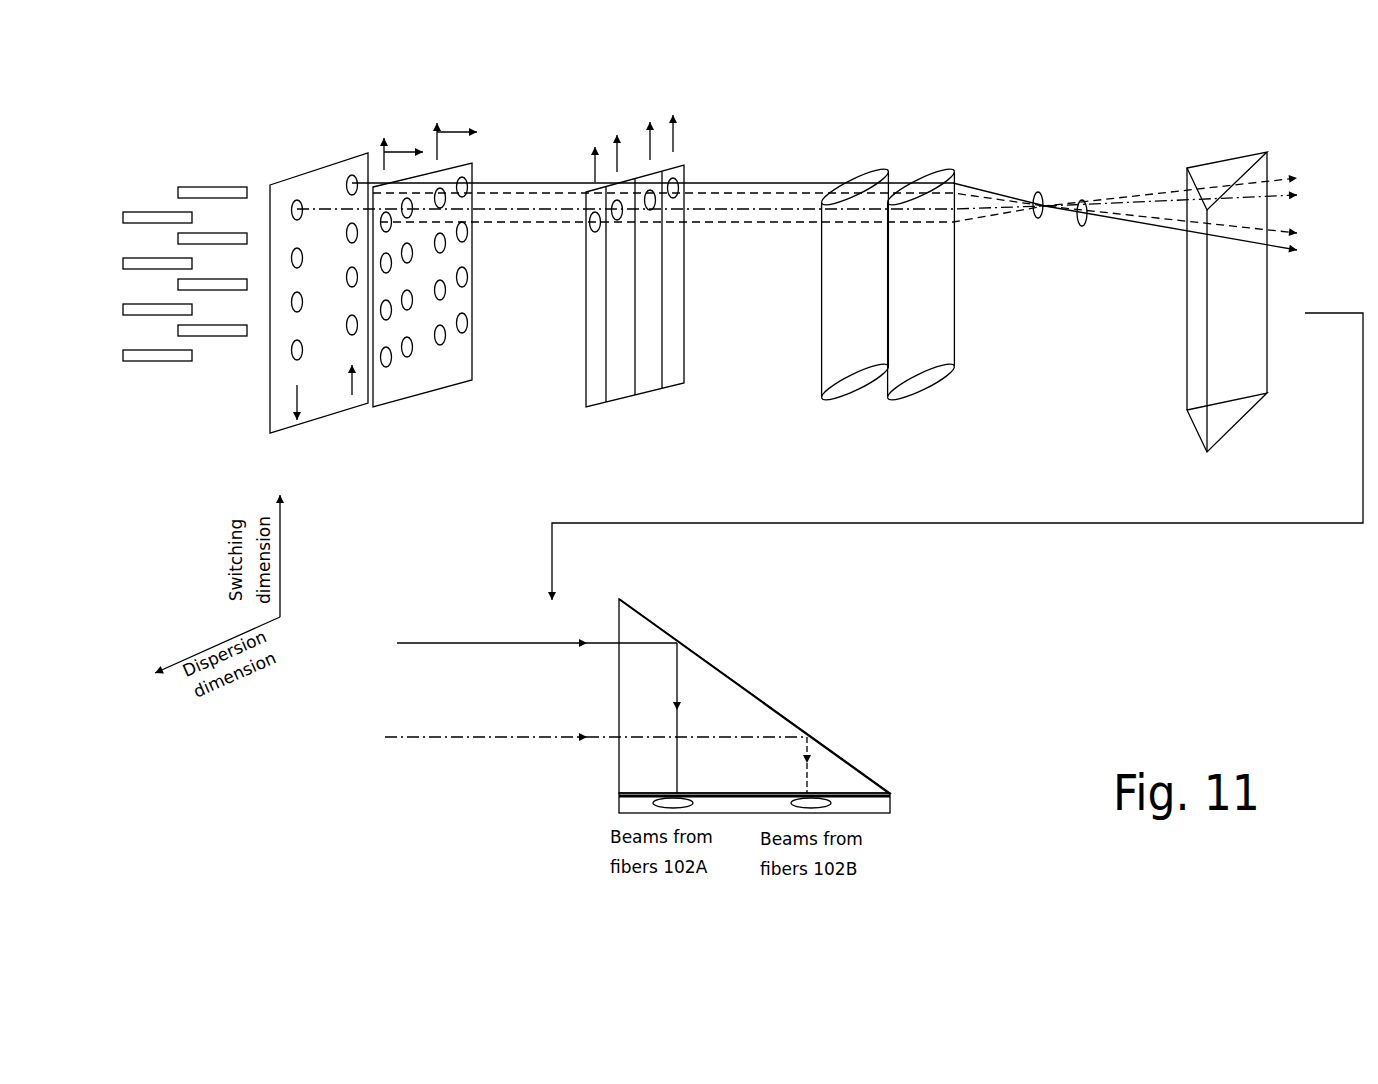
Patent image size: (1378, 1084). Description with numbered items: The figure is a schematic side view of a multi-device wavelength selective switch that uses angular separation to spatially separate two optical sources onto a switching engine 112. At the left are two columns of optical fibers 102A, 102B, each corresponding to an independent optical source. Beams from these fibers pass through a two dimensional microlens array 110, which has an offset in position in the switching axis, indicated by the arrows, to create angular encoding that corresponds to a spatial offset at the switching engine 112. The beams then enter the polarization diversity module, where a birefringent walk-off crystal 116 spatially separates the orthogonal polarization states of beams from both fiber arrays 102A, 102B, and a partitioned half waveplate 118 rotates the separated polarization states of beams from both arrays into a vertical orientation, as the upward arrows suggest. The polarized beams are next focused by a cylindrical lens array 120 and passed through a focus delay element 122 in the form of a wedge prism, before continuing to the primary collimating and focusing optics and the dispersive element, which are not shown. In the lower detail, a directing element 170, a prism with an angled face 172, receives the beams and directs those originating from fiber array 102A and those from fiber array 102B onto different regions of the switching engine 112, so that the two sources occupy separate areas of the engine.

The column of optical fibers 102A is at (216, 187).
The column of optical fibers 102B is at (160, 212).
The two dimensional microlens array 110 is at (293, 187).
The birefringent walk-off crystal 116 is at (381, 188).
The partitioned half waveplate 118 is at (590, 190).
The cylindrical lens array 120 is at (867, 180).
The focus delay element 122 is at (1218, 172).
The directing element 170 is at (754, 696).
The angled face 172 is at (737, 680).
The switching engine 112 is at (887, 814).